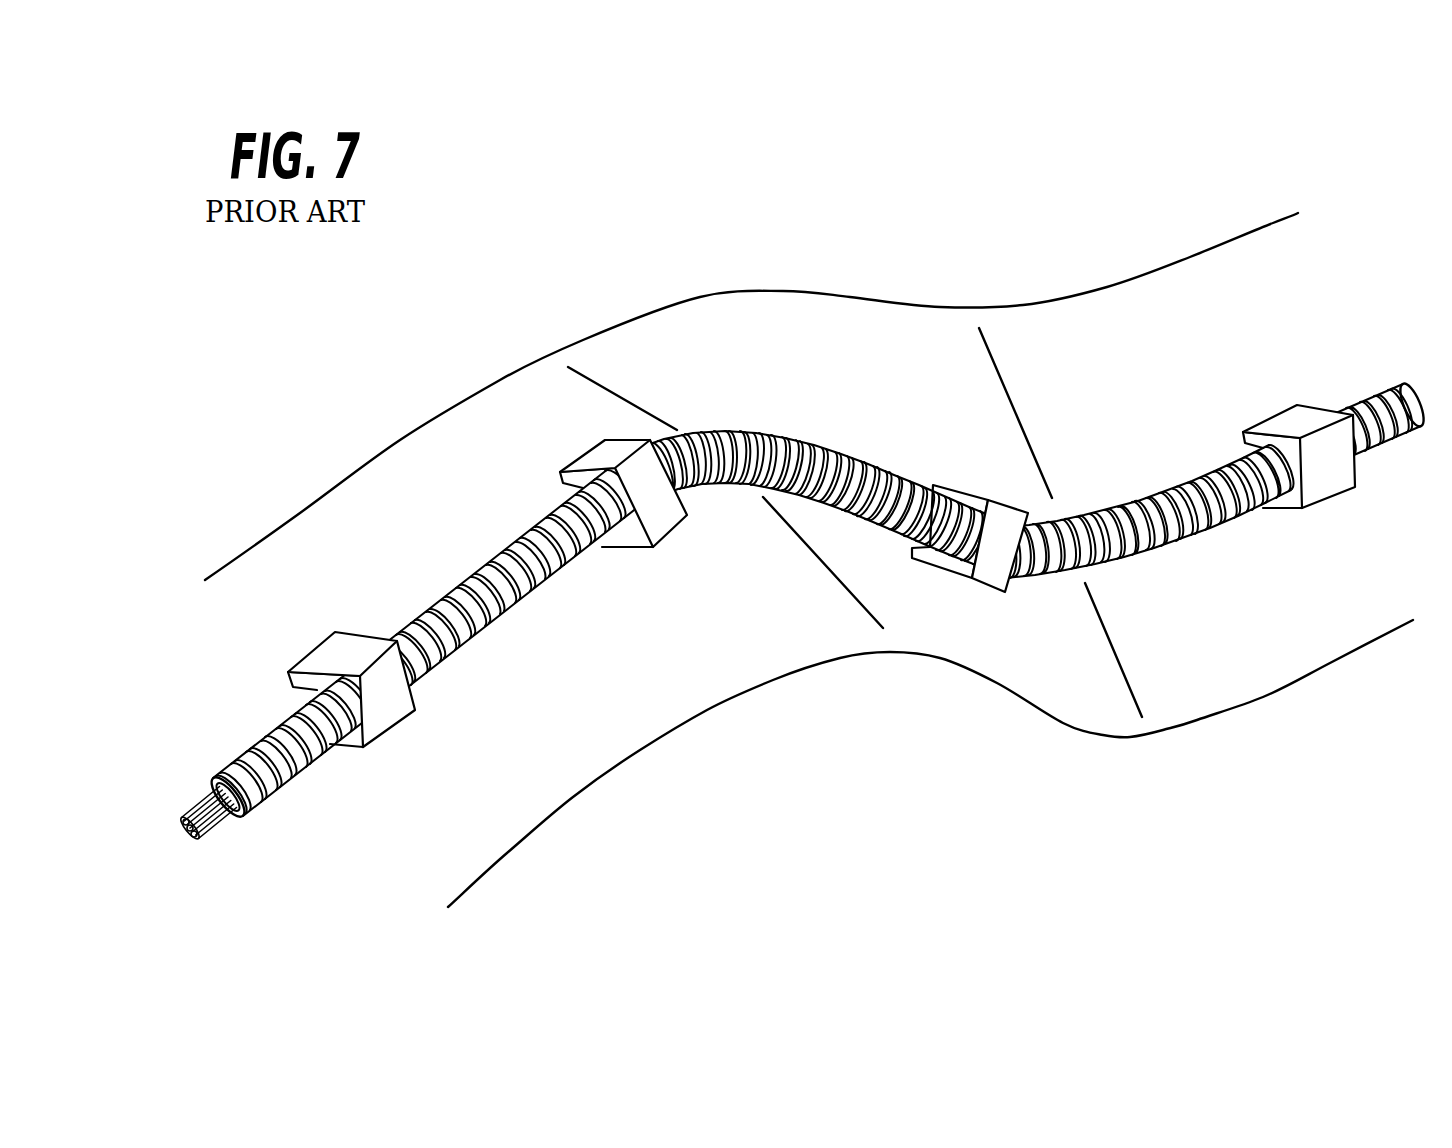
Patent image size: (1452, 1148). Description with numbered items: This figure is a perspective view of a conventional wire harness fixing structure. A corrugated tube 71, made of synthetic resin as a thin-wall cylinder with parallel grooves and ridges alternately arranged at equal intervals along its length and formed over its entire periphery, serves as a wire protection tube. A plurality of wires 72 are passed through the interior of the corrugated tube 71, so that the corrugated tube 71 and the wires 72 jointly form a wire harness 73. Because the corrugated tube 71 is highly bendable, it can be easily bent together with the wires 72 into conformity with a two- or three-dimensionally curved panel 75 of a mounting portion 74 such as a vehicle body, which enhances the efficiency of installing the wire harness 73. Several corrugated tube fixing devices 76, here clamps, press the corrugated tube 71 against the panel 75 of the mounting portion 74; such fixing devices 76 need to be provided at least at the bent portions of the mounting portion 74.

The corrugated tube 71 is at (855, 457).
The wires 72 is at (195, 805).
The wire harness 73 is at (494, 534).
The mounting portion 74 is at (744, 274).
The panel 75 is at (805, 350).
The corrugated tube fixing device 76 is at (612, 452).